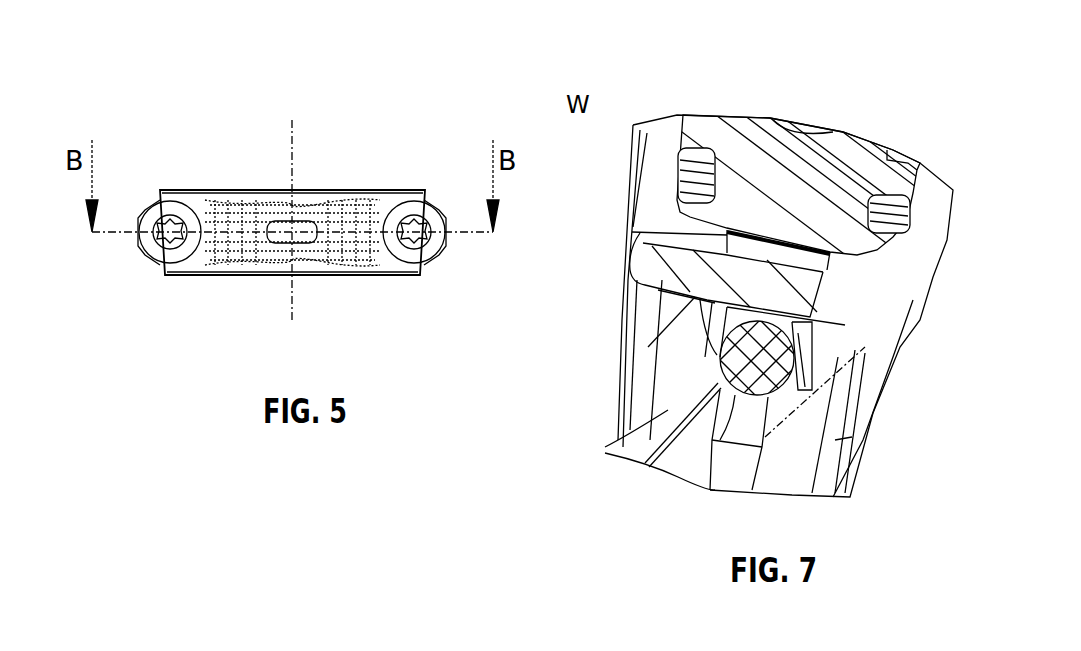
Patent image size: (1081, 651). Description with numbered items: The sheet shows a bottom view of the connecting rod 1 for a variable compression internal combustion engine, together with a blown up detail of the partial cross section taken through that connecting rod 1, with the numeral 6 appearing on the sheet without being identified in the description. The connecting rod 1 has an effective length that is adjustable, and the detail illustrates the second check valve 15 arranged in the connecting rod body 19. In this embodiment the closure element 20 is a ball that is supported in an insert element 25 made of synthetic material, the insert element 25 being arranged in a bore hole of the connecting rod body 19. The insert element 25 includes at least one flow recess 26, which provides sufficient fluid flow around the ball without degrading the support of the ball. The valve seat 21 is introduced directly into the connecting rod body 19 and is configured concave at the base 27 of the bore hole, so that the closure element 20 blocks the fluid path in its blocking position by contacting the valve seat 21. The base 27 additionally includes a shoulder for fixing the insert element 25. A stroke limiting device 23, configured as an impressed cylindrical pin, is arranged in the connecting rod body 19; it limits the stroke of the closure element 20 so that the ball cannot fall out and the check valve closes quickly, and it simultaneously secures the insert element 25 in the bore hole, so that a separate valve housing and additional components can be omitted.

In FIG. 5, the connecting rod 1 is at (393, 136).
In FIG. 7, the connecting rod 1 is at (822, 80).
In FIG. 5, the fastening screw 6 is at (224, 342).
In FIG. 7, the second check valve 15 is at (818, 362).
In FIG. 7, the connecting rod body 19 is at (672, 412).
In FIG. 7, the closure element 20 is at (715, 437).
In FIG. 7, the valve seat 21 is at (660, 437).
In FIG. 7, the stroke limiting device 23 is at (652, 288).
In FIG. 7, the insert element 25 is at (815, 372).
In FIG. 7, the flow recess 26 is at (712, 362).
In FIG. 7, the base 27 is at (715, 367).